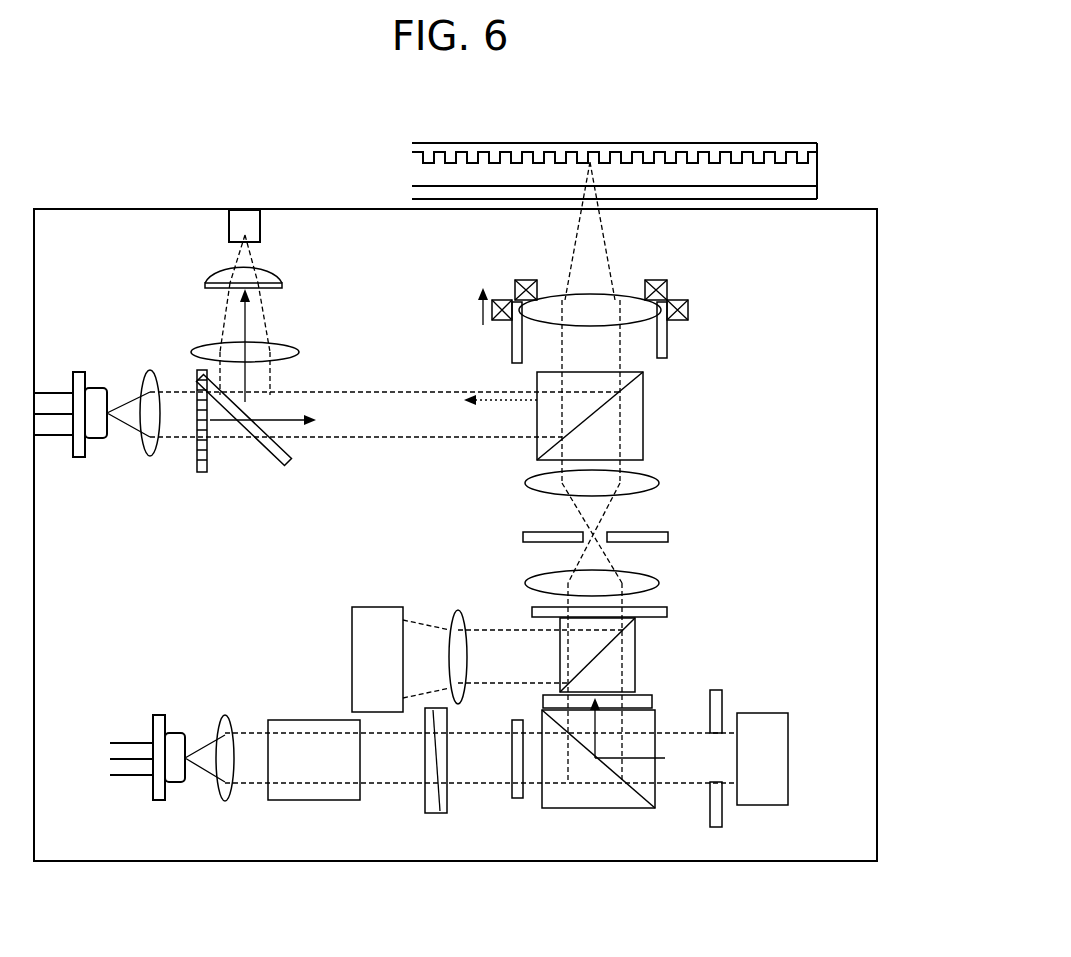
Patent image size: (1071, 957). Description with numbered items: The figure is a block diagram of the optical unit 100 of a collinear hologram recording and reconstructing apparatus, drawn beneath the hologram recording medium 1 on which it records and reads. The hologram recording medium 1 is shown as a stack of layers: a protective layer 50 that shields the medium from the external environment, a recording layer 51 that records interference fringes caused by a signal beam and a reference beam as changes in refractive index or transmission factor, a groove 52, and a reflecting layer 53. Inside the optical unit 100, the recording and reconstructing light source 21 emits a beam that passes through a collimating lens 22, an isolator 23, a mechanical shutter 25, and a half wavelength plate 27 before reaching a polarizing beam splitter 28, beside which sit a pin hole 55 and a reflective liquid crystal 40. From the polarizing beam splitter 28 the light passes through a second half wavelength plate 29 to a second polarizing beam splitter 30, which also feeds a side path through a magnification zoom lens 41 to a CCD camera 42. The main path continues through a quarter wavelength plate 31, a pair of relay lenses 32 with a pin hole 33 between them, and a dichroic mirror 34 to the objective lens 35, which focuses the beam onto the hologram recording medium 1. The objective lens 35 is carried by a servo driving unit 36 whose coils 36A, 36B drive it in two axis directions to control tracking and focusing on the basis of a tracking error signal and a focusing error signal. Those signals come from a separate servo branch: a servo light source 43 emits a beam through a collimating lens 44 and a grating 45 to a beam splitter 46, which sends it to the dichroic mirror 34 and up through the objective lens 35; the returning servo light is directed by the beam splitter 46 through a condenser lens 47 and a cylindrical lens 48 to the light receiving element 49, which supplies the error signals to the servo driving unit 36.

The optical unit 100 is at (135, 206).
The hologram recording medium 1 is at (656, 159).
The protective layer 50 is at (640, 196).
The recording layer 51 is at (817, 172).
The groove 52 is at (817, 155).
The reflecting layer 53 is at (817, 145).
The recording and reconstructing light source 21 is at (164, 714).
The collimating lens 22 is at (226, 714).
The isolator 23 is at (318, 718).
The mechanical shutter 25 is at (426, 815).
The ½ wavelength plate 27 is at (516, 800).
The polarizing beam splitter 28 is at (582, 810).
The ½ wavelength plate 29 is at (652, 701).
The polarizing beam splitter 30 is at (635, 655).
The ¼ wavelength plate 31 is at (667, 612).
The relay lens 32 is at (655, 484).
The pin hole 33 is at (668, 537).
The dichroic mirror 34 is at (643, 410).
The objective lens 35 is at (588, 327).
The servo driving unit 36 is at (645, 302).
The coil 36A is at (652, 289).
The coil 36B is at (750, 246).
The reflective liquid crystal 40 is at (788, 756).
The magnification zoom lens 41 is at (460, 612).
The CCD camera 42 is at (378, 606).
The servo light source 43 is at (78, 370).
The collimating lens 44 is at (150, 457).
The grating 45 is at (202, 473).
The beam splitter 46 is at (292, 460).
The condenser lens 47 is at (299, 350).
The cylindrical lens 48 is at (283, 279).
The light receiving element 49 is at (260, 228).
The pin hole 55 is at (716, 690).